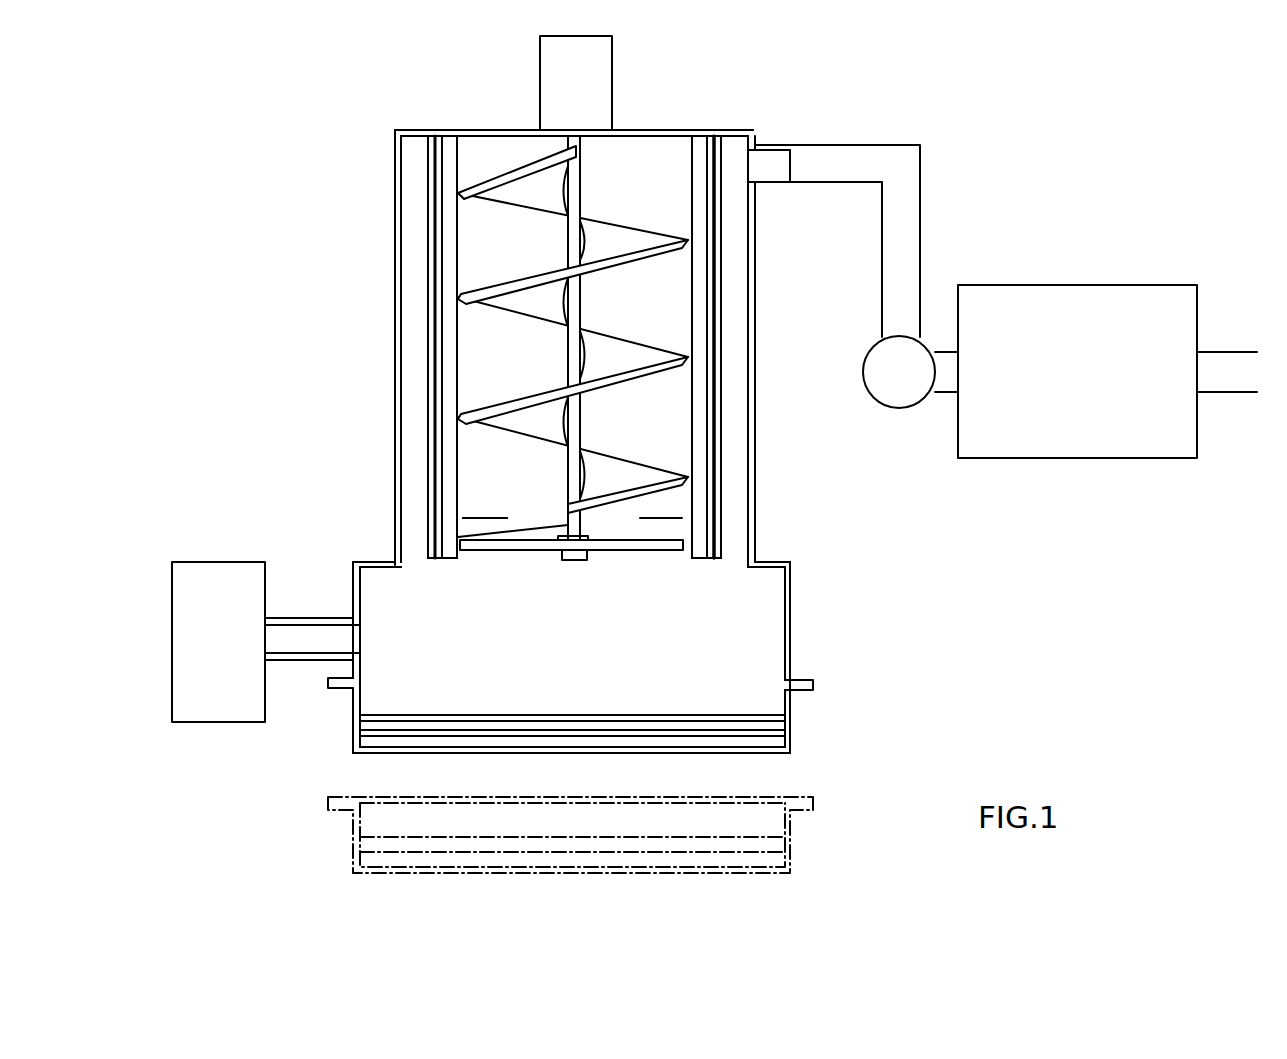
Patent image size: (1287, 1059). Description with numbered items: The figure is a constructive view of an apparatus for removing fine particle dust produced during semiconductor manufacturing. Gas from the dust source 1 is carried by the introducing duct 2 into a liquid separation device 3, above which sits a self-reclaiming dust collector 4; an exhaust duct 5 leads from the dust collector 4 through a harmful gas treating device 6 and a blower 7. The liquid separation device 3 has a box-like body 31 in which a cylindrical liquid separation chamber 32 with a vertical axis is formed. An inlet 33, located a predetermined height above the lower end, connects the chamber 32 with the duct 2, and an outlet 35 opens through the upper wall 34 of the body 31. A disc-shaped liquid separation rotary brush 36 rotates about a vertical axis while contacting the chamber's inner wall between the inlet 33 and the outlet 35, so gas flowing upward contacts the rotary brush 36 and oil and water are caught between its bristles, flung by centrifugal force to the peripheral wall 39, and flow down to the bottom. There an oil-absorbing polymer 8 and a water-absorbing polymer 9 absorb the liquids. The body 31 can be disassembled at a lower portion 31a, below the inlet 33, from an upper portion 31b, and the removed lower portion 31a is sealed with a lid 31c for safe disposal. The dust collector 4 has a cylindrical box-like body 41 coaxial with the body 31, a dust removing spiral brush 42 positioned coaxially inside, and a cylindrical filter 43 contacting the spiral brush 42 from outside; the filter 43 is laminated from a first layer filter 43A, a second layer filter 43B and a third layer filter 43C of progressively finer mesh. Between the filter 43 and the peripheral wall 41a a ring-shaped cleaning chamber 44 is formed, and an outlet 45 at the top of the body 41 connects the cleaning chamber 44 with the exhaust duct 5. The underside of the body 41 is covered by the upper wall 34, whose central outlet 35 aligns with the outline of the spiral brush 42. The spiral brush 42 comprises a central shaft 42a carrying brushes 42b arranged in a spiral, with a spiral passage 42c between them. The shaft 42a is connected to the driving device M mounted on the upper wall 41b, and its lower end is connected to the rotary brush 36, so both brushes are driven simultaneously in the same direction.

The driving device M is at (540, 70).
The source 1 is at (217, 562).
The introducing duct 2 is at (308, 660).
The liquid separation device 3 is at (598, 656).
The self-reclaiming dust collector 4 is at (392, 132).
The exhaust duct 5 is at (922, 175).
The harmful gas treating device 6 is at (1032, 460).
The blower 7 is at (882, 397).
The oil-absorbing polymer 8 is at (502, 730).
The water-absorbing polymer 9 is at (648, 735).
The box-like body 31 is at (794, 602).
The lower portion 31a is at (795, 748).
The upper portion 31b is at (770, 560).
The lid 31c is at (388, 793).
The liquid separation chamber 32 is at (772, 632).
The inlet 33 is at (355, 640).
The upper wall 34 is at (375, 562).
The outlet 35 is at (470, 522).
The liquid separation rotary brush 36 is at (504, 550).
The peripheral wall 39 is at (792, 660).
The box-like body 41 is at (395, 168).
The peripheral wall 41a is at (408, 303).
The upper wall 41b is at (650, 131).
The dust removing spiral brush 42 is at (496, 338).
The central shaft 42a is at (585, 180).
The brushes 42b is at (475, 398).
The spiral passage 42c is at (487, 353).
The cylindrical filter 43 is at (428, 239).
The first layer filter 43A is at (703, 212).
The second layer filter 43B is at (712, 255).
The third layer filter 43C is at (722, 290).
The cleaning chamber 44 is at (421, 152).
The outlet 45 is at (760, 166).